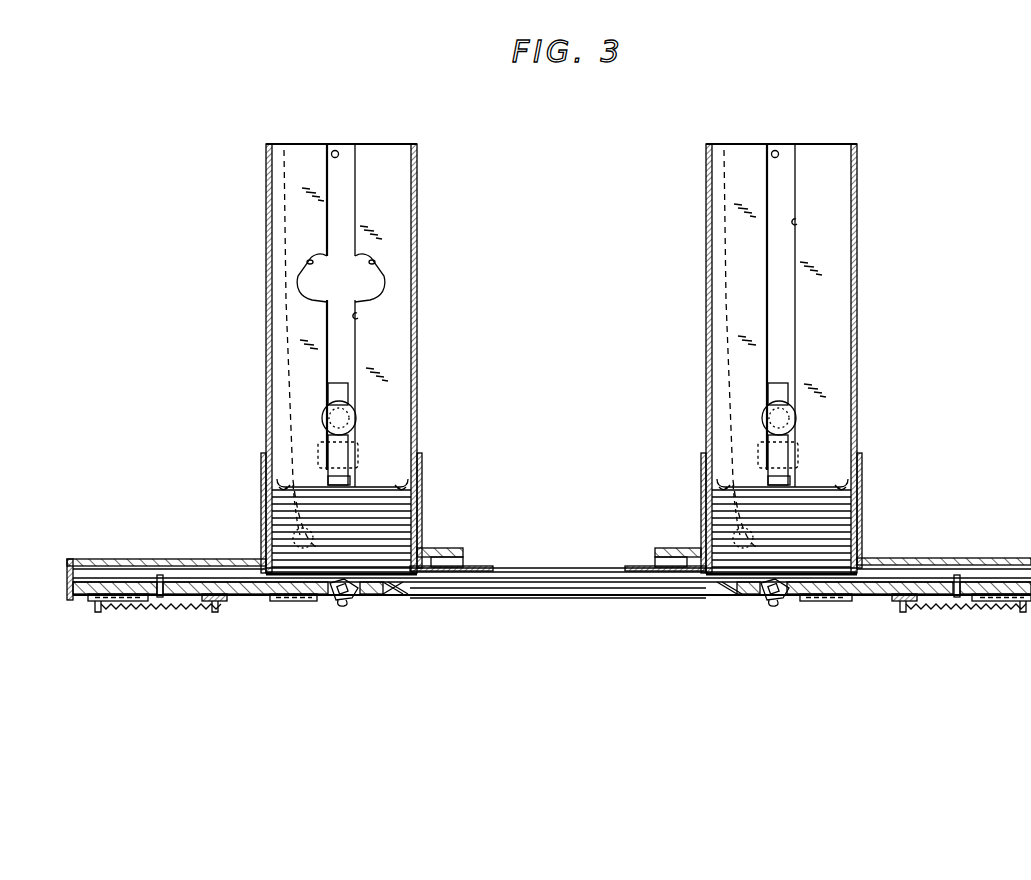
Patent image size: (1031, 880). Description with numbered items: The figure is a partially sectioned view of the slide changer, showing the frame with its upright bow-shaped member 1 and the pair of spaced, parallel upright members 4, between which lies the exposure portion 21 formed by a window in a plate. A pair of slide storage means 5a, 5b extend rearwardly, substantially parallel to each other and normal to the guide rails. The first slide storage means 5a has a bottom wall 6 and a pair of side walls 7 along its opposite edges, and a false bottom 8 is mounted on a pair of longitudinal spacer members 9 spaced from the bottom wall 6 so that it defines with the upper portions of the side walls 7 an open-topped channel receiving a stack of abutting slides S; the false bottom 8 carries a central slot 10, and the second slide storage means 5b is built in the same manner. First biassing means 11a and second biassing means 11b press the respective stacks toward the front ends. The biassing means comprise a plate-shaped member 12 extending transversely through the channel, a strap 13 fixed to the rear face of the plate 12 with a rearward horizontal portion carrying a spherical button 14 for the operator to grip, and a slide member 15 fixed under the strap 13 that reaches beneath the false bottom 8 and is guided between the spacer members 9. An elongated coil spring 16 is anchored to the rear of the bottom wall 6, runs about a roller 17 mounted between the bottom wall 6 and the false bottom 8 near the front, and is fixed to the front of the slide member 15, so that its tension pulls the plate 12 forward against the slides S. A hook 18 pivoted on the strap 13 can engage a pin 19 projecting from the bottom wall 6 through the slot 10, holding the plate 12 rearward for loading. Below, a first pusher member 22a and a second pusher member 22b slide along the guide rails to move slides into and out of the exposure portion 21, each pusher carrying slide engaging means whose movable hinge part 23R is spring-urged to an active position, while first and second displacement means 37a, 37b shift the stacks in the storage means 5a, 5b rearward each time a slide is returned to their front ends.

The upright bow-shaped member 1 is at (73, 586).
The upright member 4 is at (456, 548).
The first slide storage means 5a is at (262, 362).
The second slide storage means 5b is at (862, 360).
The bottom wall 6 is at (346, 193).
The side wall 7 is at (266, 230).
The false bottom 8 is at (396, 348).
The spacer member 9 is at (310, 284).
The central slot 10 is at (360, 318).
The first biassing means 11a is at (352, 483).
The second biassing means 11b is at (792, 483).
The plate-shaped member 12 is at (290, 484).
The strap 13 is at (352, 440).
The button 14 is at (356, 417).
The slide member 15 is at (358, 460).
The coil spring 16 is at (290, 406).
The roller 17 is at (270, 522).
The hook 18 is at (336, 396).
The pin 19 is at (338, 151).
The exposure portion 21 is at (565, 568).
The first pusher member 22a is at (264, 601).
The second pusher member 22b is at (868, 601).
The right fastener 23R is at (722, 597).
The first displacement means 37a is at (345, 603).
The second displacement means 37b is at (773, 603).
The slides S is at (412, 499).